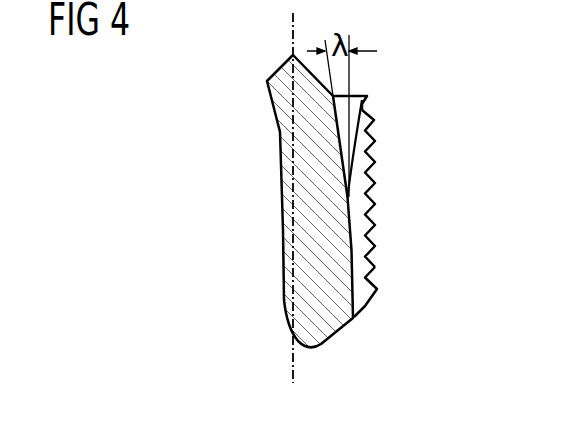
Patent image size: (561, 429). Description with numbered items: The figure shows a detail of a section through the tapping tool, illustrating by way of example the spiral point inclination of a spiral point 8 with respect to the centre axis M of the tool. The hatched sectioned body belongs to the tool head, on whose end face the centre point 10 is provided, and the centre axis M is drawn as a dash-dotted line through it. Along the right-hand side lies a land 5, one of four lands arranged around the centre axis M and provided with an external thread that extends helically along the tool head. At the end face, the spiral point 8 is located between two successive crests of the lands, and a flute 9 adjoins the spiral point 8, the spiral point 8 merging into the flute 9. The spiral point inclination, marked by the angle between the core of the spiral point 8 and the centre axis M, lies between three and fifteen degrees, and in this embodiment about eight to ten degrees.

The centre point 10 is at (283, 73).
The spiral point 8 is at (367, 100).
The land 5 is at (375, 150).
The flute 9 is at (363, 275).
The centre axis M is at (290, 226).